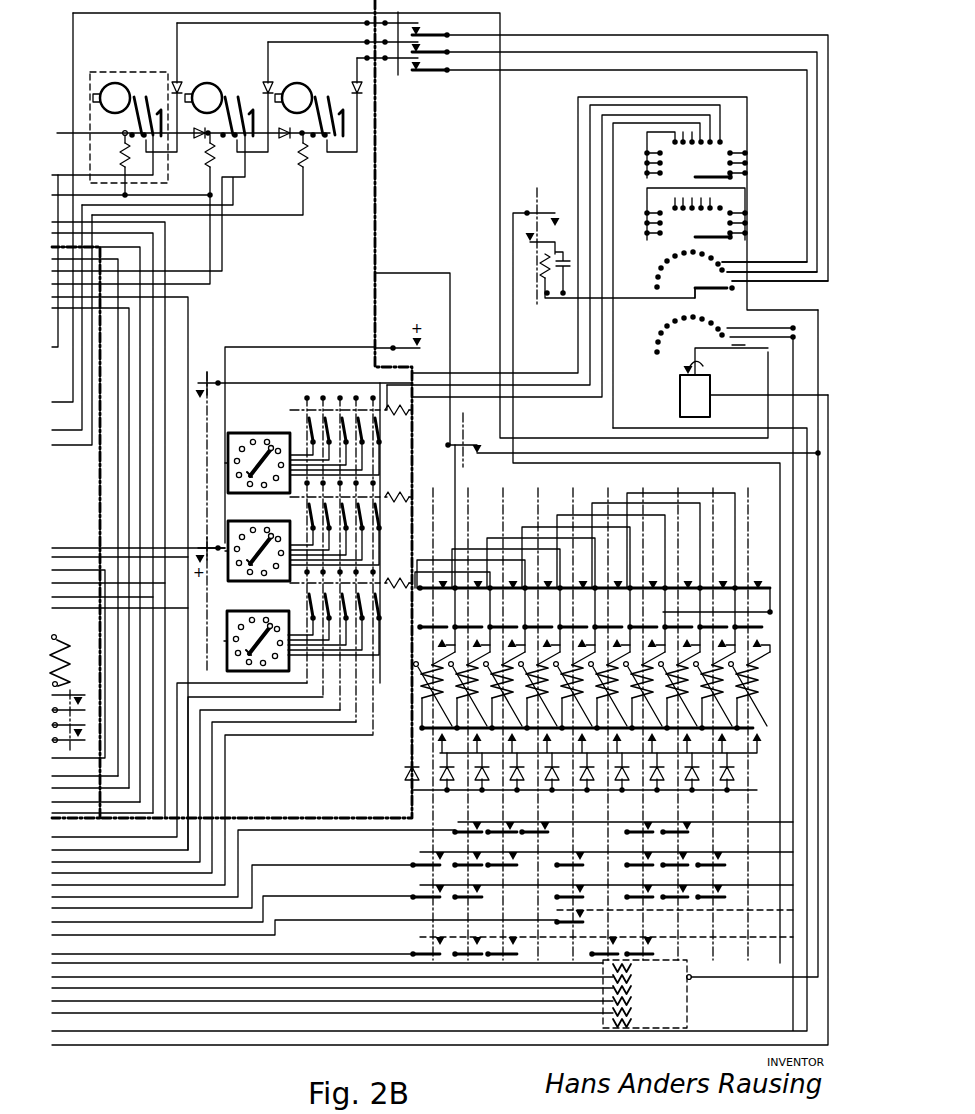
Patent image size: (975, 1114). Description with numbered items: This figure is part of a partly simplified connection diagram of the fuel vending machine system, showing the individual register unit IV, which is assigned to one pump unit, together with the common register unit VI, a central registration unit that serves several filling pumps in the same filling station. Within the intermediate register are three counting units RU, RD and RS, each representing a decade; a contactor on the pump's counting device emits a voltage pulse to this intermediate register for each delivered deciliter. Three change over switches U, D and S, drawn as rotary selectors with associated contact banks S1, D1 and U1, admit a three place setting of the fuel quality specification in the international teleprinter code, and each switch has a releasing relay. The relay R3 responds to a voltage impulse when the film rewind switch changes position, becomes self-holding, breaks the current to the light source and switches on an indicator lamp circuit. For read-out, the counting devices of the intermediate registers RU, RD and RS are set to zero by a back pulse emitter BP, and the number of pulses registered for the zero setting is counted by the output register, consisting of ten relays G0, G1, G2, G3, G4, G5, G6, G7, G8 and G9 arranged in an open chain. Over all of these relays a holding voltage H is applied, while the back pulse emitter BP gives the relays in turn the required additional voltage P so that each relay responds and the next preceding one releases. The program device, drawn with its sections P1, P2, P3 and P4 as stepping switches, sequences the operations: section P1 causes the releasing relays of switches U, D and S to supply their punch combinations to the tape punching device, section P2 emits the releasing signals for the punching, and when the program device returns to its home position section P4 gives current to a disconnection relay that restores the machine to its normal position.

The counting unit RU is at (147, 72).
The counting unit RD is at (247, 80).
The counting unit RS is at (331, 80).
The back pulse emitter BP is at (646, 564).
The program section P1 is at (712, 158).
The program section P2 is at (705, 226).
The program section P3 is at (720, 283).
The program section P4 is at (712, 362).
The rotary selector switch S1 is at (293, 437).
The rotary selector switch D1 is at (293, 525).
The rotary selector switch U1 is at (293, 615).
The change over switch S is at (229, 470).
The change over switch D is at (229, 560).
The change over switch U is at (228, 650).
The relay R3 is at (62, 640).
The relay G0 is at (436, 713).
The relay G1 is at (471, 713).
The relay G2 is at (505, 713).
The relay G3 is at (540, 713).
The relay G4 is at (575, 713).
The relay G5 is at (611, 713).
The relay G6 is at (644, 713).
The relay G7 is at (680, 713).
The relay G8 is at (716, 713).
The relay G9 is at (750, 713).
The program device P is at (723, 616).
The holding voltage H is at (600, 790).
The individual register unit IV is at (318, 415).
The common register unit VI is at (410, 409).